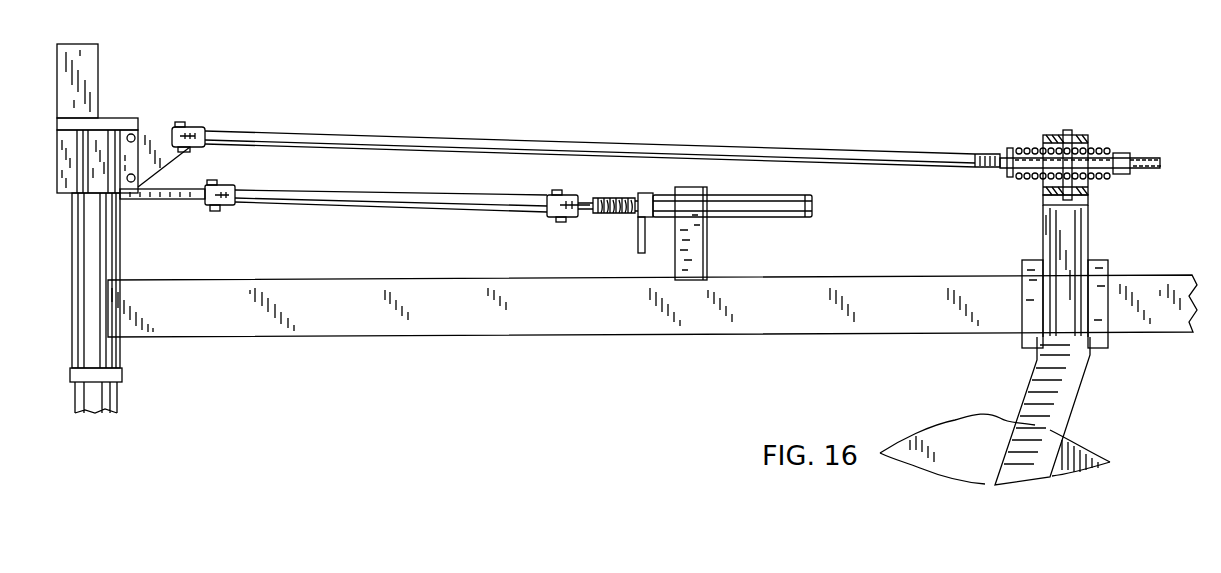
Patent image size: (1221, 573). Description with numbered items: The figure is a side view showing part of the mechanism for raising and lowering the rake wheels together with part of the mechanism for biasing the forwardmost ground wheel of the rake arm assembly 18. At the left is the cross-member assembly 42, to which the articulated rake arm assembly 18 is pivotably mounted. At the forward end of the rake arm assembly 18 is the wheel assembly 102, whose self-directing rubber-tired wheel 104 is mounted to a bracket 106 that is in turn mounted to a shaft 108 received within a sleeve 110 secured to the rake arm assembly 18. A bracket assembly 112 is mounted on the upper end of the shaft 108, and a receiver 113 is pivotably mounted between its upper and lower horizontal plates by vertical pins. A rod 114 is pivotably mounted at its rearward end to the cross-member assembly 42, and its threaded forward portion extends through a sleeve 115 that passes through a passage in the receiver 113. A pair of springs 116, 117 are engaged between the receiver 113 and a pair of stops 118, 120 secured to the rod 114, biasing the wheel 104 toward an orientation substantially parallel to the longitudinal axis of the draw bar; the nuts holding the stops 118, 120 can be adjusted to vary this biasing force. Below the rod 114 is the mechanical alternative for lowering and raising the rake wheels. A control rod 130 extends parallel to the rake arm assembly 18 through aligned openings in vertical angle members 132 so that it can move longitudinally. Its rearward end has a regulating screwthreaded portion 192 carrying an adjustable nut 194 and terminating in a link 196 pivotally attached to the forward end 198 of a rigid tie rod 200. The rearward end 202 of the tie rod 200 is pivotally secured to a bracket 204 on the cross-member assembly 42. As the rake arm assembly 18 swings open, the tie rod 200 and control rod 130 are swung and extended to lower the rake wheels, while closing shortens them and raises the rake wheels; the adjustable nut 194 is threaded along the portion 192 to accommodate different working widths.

The cross-member assembly 42 is at (53, 118).
The bracket 204 is at (212, 128).
The rearward end of the tie rod 202 is at (247, 184).
The tie rod 200 is at (473, 195).
The forward end of the tie rod 198 is at (563, 195).
The link 196 is at (590, 198).
The regulating screwthreaded portion 192 is at (625, 198).
The adjustable nut 194 is at (650, 195).
The rod 114 is at (740, 151).
The vertical angle members 132 is at (695, 253).
The control rod 130 is at (780, 217).
The rake arm assembly 18 is at (970, 275).
The stop 118 is at (1008, 150).
The spring 116 is at (1028, 150).
The sleeve 115 is at (1105, 175).
The bracket assembly 112 is at (1085, 140).
The receiver 113 is at (1070, 133).
The stop 120 is at (1115, 155).
The spring 117 is at (1094, 177).
The sleeve 110 is at (1100, 276).
The shaft 108 is at (1105, 337).
The bracket 106 is at (1070, 387).
The rubber-tired wheel 104 is at (1110, 460).
The wheel assembly 102 is at (1110, 425).